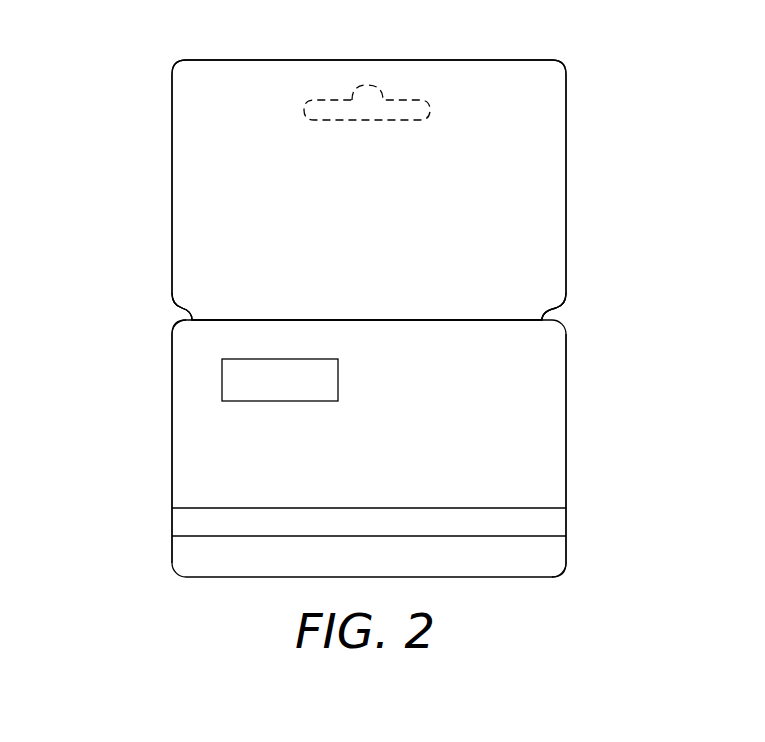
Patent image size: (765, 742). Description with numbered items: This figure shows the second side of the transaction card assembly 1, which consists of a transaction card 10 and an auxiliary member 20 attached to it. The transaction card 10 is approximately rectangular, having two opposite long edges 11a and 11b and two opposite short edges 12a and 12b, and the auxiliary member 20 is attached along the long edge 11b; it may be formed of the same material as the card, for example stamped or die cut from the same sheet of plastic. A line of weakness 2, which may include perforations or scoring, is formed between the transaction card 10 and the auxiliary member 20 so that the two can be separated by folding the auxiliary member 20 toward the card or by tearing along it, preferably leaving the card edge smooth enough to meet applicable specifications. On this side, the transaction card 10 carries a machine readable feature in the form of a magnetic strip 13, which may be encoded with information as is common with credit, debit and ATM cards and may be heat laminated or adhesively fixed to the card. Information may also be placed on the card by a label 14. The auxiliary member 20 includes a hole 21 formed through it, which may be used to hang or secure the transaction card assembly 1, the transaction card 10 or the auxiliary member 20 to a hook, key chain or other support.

The transaction card assembly 1 is at (106, 34).
The line of weakness 2 is at (517, 320).
The transaction card 10 is at (569, 399).
The long edge 11a is at (468, 578).
The long edge 11b is at (188, 318).
The short edge 12a is at (172, 453).
The short edge 12b is at (567, 464).
The magnetic strip 13 is at (195, 527).
The label 14 is at (222, 390).
The auxiliary member 20 is at (569, 94).
The hole 21 is at (367, 85).